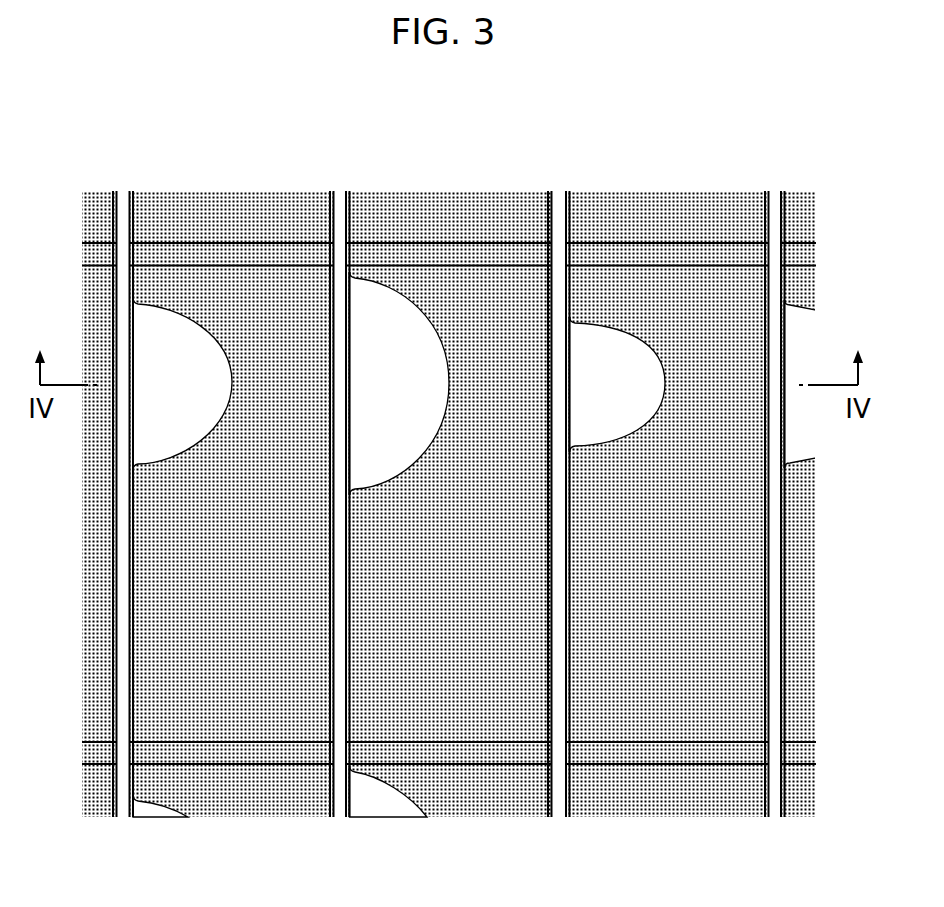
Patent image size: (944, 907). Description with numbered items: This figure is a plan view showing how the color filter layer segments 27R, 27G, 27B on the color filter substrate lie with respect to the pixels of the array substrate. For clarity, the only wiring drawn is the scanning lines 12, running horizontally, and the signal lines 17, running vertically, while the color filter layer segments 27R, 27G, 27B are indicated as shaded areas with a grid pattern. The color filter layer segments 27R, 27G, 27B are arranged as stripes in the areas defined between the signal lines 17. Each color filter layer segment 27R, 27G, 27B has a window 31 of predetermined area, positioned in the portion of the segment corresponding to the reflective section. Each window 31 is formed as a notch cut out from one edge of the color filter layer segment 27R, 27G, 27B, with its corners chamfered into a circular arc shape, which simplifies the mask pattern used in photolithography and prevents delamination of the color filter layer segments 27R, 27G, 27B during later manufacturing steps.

The scanning line 12 is at (96, 255).
The signal line 17 is at (127, 190).
The window 31 is at (184, 340).
The color filter layer segment 27R is at (250, 792).
The color filter layer segment 27G is at (468, 793).
The color filter layer segment 27B is at (682, 792).